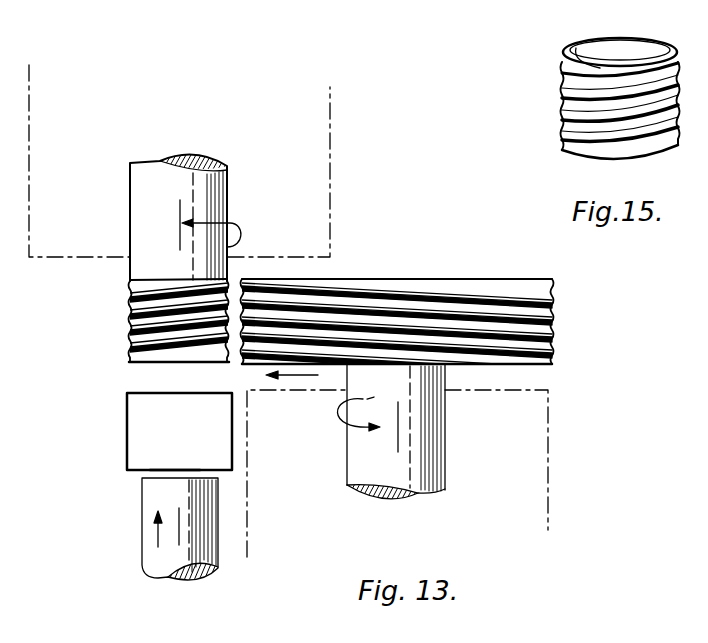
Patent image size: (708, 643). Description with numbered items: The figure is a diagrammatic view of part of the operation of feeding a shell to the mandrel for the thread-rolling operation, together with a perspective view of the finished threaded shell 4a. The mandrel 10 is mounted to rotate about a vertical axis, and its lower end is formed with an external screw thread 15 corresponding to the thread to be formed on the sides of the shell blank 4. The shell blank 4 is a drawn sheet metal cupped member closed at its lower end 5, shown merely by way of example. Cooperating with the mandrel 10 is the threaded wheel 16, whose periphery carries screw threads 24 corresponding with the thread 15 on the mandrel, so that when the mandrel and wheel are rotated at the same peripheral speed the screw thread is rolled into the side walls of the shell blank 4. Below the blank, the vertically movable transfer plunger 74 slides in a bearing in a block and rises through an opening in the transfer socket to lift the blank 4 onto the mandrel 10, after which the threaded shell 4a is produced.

In FIG. 13, the mandrel 10 is at (132, 227).
In FIG. 13, the external screw thread 15 is at (128, 324).
In FIG. 13, the threaded wheel 16 is at (397, 382).
In FIG. 13, the screw threads 24 is at (457, 308).
In FIG. 13, the shell blank 4 is at (125, 440).
In FIG. 13, the closed lower end 5 is at (168, 469).
In FIG. 13, the transfer plunger 74 is at (140, 525).
In FIG. 15, the threaded shell 4a is at (555, 113).